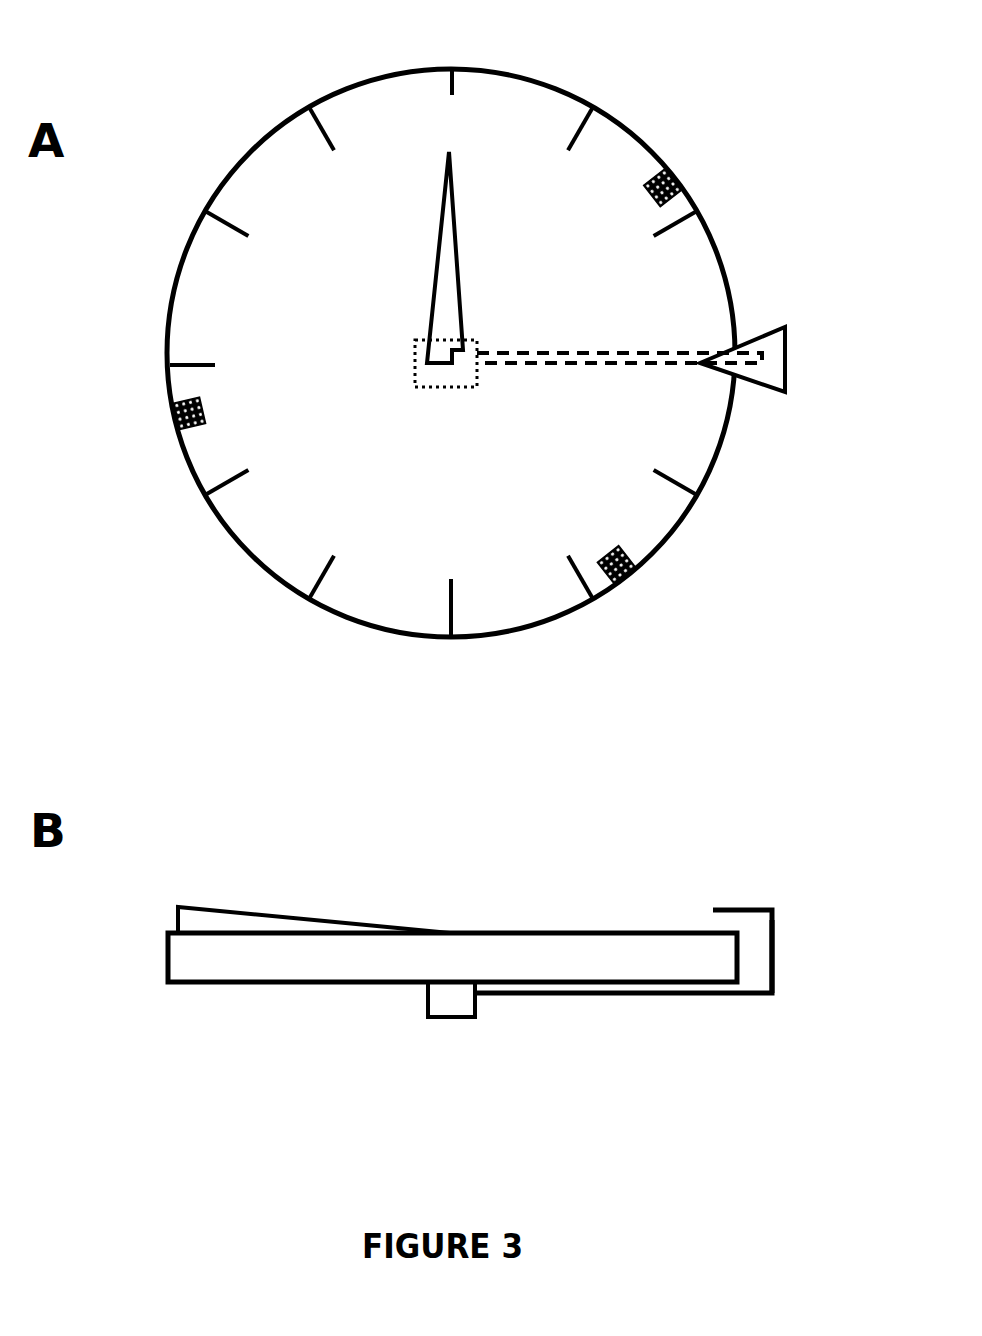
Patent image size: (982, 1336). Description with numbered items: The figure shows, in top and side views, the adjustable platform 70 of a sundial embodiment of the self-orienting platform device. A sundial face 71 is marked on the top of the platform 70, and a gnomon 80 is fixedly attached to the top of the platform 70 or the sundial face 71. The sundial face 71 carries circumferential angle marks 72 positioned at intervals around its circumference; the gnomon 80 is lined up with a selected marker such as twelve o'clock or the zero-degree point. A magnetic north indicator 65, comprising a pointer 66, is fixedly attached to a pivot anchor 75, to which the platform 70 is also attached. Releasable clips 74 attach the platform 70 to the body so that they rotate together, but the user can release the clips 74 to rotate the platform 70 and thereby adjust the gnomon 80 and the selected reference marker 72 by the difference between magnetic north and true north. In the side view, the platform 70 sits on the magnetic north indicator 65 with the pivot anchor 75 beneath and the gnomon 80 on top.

In FIG. 3A, the magnetic north indicator 65 is at (547, 368).
In FIG. 3B, the magnetic north indicator 65 is at (773, 948).
In FIG. 3A, the pointer 66 is at (767, 325).
In FIG. 3B, the pointer 66 is at (743, 907).
In FIG. 3A, the adjustable platform 70 is at (250, 562).
In FIG. 3B, the adjustable platform 70 is at (190, 960).
In FIG. 3A, the sundial face 71 is at (333, 326).
In FIG. 3A, the angle marks 72 is at (456, 70).
In FIG. 3A, the releasable clips 74 is at (678, 177).
In FIG. 3A, the pivot anchor 75 is at (433, 382).
In FIG. 3B, the pivot anchor 75 is at (428, 1007).
In FIG. 3A, the gnomon 80 is at (444, 203).
In FIG. 3B, the gnomon 80 is at (238, 920).